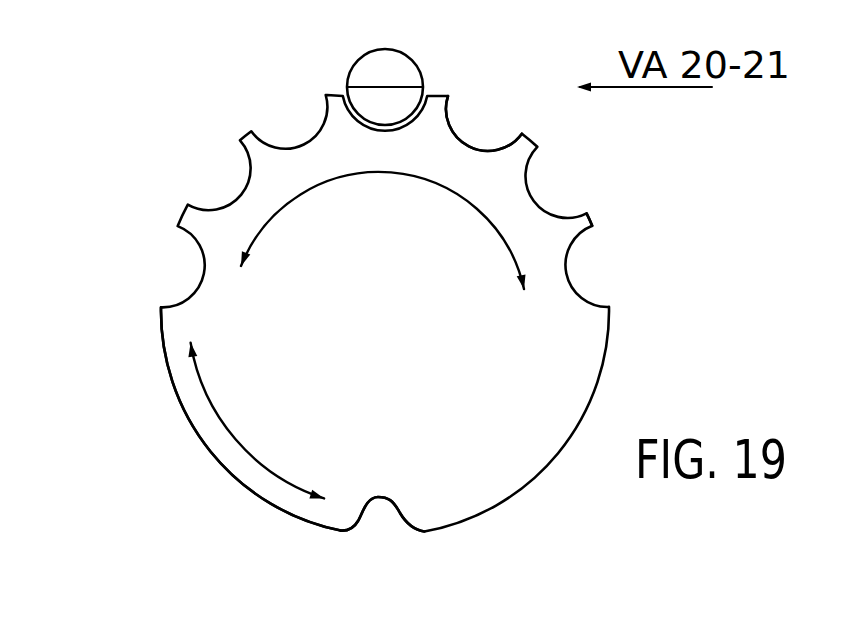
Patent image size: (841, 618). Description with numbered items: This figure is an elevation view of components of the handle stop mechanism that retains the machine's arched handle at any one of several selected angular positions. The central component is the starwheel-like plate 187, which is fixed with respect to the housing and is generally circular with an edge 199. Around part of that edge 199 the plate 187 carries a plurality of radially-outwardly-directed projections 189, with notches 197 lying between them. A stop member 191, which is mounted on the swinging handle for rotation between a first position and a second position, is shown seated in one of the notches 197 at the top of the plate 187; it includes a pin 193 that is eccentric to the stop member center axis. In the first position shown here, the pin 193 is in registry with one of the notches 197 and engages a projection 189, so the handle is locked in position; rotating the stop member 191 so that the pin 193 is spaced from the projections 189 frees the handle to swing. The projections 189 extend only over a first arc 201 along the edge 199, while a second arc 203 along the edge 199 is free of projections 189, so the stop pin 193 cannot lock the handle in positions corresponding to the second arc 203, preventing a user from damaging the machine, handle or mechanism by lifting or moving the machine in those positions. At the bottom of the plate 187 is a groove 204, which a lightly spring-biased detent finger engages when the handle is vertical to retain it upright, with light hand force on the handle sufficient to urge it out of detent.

The starwheel-like plate 187 is at (135, 383).
The projections 189 is at (590, 217).
The stop member 191 is at (330, 38).
The pin 193 is at (392, 103).
The notches 197 is at (463, 140).
The edge 199 is at (205, 452).
The first arc 201 is at (346, 182).
The second arc 203 is at (233, 443).
The groove 204 is at (378, 499).